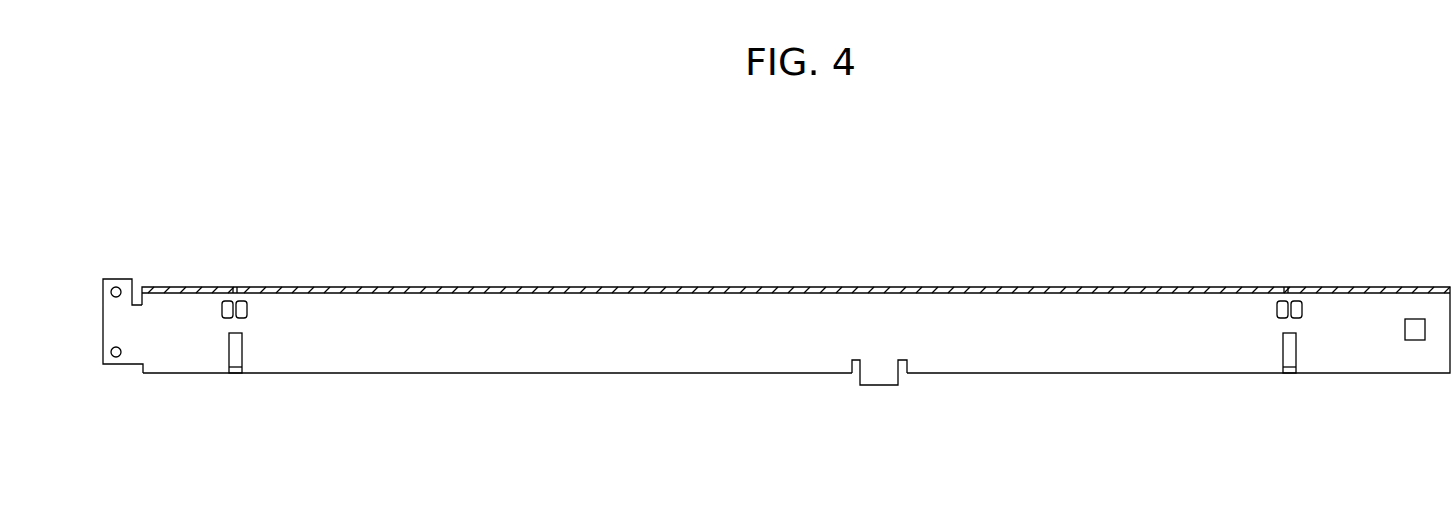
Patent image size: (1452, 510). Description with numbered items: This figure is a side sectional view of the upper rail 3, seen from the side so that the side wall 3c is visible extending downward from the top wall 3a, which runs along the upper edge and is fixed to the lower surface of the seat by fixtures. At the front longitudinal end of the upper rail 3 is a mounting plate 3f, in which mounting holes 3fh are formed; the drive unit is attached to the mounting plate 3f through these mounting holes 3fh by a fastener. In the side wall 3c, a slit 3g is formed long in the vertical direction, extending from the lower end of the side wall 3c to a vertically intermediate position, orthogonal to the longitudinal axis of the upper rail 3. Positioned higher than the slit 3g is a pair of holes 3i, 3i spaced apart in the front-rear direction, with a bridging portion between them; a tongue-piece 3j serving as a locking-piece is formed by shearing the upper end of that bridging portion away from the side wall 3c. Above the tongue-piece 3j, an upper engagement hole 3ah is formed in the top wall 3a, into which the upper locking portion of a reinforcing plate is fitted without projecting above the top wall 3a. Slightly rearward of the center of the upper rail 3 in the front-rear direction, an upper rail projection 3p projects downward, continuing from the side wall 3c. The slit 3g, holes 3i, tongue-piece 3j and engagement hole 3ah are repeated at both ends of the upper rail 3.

The upper rail 3 is at (634, 285).
The top wall 3a is at (765, 287).
The side wall 3c is at (826, 300).
The mounting plate 3f is at (104, 334).
The mounting hole 3fh is at (117, 279).
The upper engagement hole 3ah is at (236, 289).
The tongue-piece 3j is at (227, 289).
The hole 3i is at (222, 309).
The slit 3g is at (242, 350).
The upper rail projection 3p is at (877, 375).